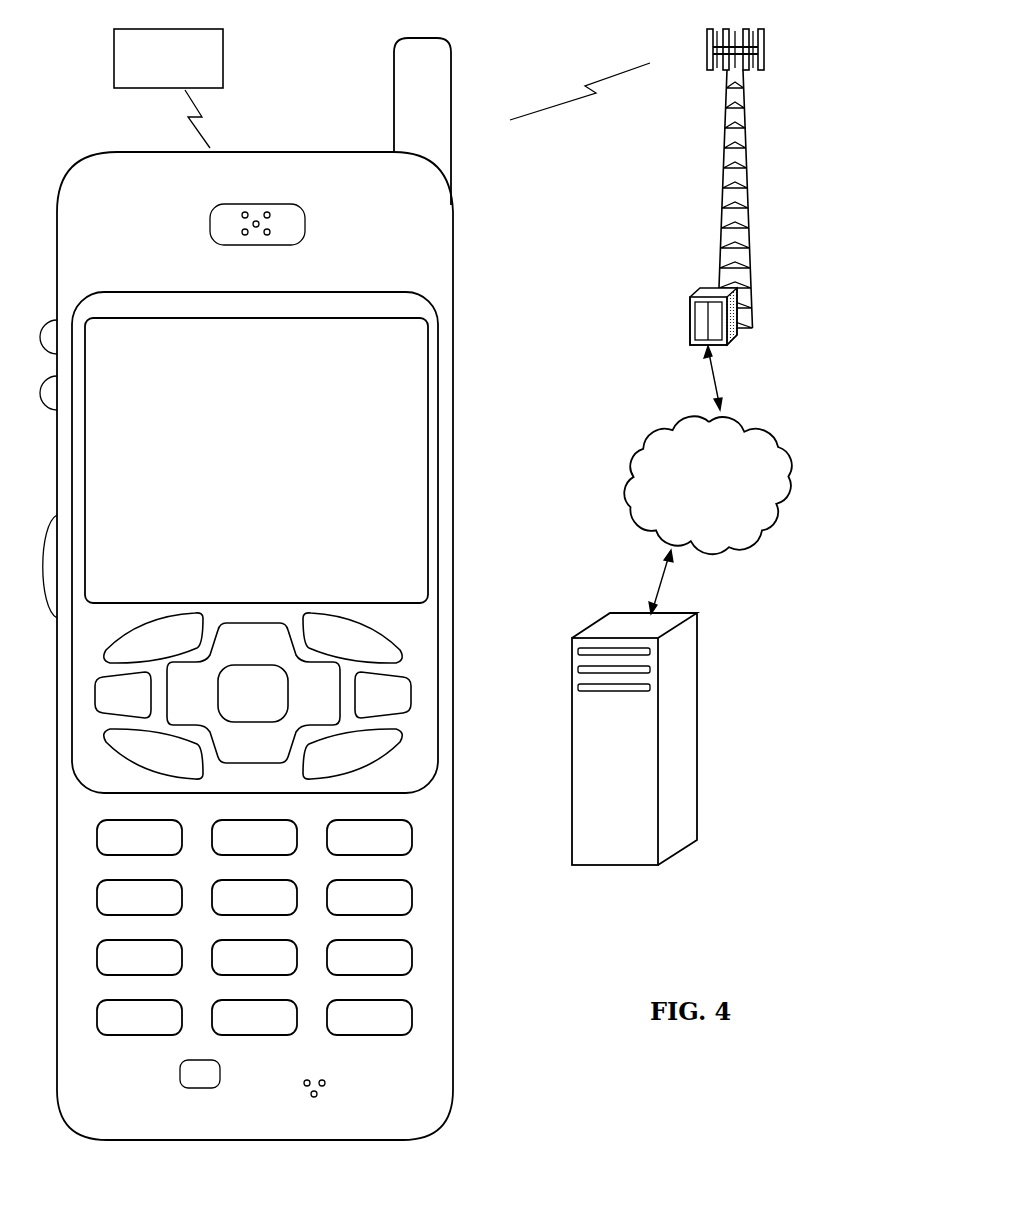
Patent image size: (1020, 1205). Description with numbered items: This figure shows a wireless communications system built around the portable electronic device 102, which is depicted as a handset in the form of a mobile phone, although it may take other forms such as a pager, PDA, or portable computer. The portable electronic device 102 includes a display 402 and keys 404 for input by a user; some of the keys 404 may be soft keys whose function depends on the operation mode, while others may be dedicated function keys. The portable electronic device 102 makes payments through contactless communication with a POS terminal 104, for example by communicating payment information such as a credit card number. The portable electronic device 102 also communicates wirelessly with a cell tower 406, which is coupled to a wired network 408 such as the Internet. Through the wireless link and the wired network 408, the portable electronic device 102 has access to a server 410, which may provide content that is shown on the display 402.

The portable electronic device 102 is at (105, 1140).
The point-of-sale (POS) terminal 104 is at (224, 60).
The display 402 is at (428, 330).
The keys 404 is at (464, 1057).
The cell tower 406 is at (722, 200).
The wired network 408 is at (633, 526).
The server 410 is at (615, 867).